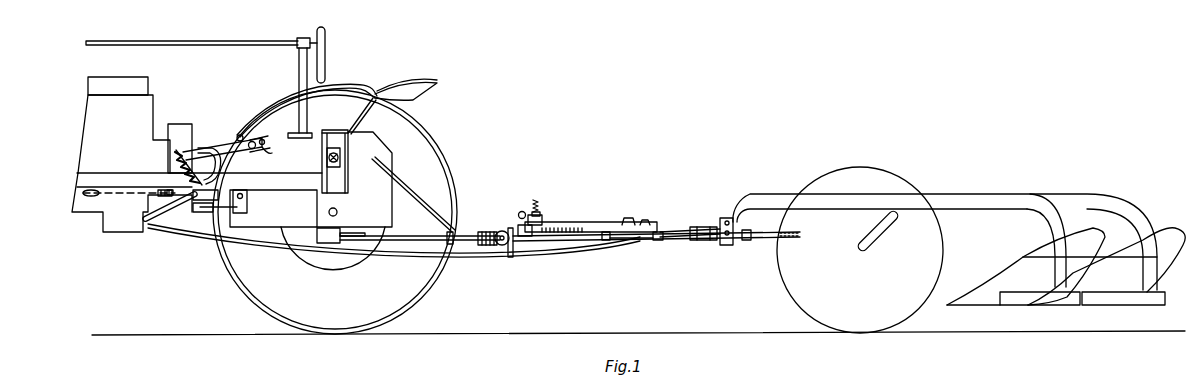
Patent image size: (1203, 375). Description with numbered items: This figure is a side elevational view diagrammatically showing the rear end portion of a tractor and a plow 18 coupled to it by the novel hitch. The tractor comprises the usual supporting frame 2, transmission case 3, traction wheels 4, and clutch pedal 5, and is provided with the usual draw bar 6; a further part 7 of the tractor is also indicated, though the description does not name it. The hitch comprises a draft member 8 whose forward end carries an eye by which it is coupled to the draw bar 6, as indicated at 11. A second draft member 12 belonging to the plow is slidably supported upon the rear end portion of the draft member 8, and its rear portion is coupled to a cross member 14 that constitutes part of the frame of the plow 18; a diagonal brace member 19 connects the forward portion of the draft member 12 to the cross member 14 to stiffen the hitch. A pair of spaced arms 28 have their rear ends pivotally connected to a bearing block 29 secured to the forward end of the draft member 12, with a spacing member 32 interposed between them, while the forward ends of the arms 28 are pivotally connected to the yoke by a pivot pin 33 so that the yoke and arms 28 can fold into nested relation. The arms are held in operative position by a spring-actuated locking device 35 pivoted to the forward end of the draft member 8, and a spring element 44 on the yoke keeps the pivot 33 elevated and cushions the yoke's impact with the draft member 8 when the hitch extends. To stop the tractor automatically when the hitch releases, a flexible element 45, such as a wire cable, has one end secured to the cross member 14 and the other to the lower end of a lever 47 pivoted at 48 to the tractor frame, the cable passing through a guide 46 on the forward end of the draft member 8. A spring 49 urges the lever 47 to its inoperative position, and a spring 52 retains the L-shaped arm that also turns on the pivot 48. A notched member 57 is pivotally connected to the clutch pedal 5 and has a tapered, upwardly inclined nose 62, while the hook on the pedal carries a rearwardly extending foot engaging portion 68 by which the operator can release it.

The supporting frame 2 is at (76, 183).
The transmission case 3 is at (253, 220).
The traction wheels 4 is at (432, 137).
The clutch pedal 5 is at (262, 140).
The draw bar 6 is at (493, 240).
The brace 7 is at (405, 231).
The draft member 8 is at (558, 243).
The coupling of draft member to draw bar 11 is at (502, 232).
The second draft member 12 is at (750, 232).
The cross member 14 is at (705, 240).
The plow 18 is at (963, 176).
The diagonal brace member 19 is at (677, 227).
The spaced arms 28 is at (580, 222).
The bearing block 29 is at (625, 218).
The spacing member 32 is at (640, 242).
The pivot pin 33 is at (540, 225).
The spring-actuated locking device 35 is at (523, 207).
The spring element 44 is at (536, 201).
The flexible element 45 is at (583, 252).
The guide 46 is at (511, 254).
The lever 47 is at (147, 224).
The pivot 48 is at (220, 181).
The spring 49 is at (102, 189).
The spring 52 is at (180, 163).
The notched member 57 is at (222, 150).
The nose 62 is at (180, 150).
The foot engaging portion 68 is at (272, 153).